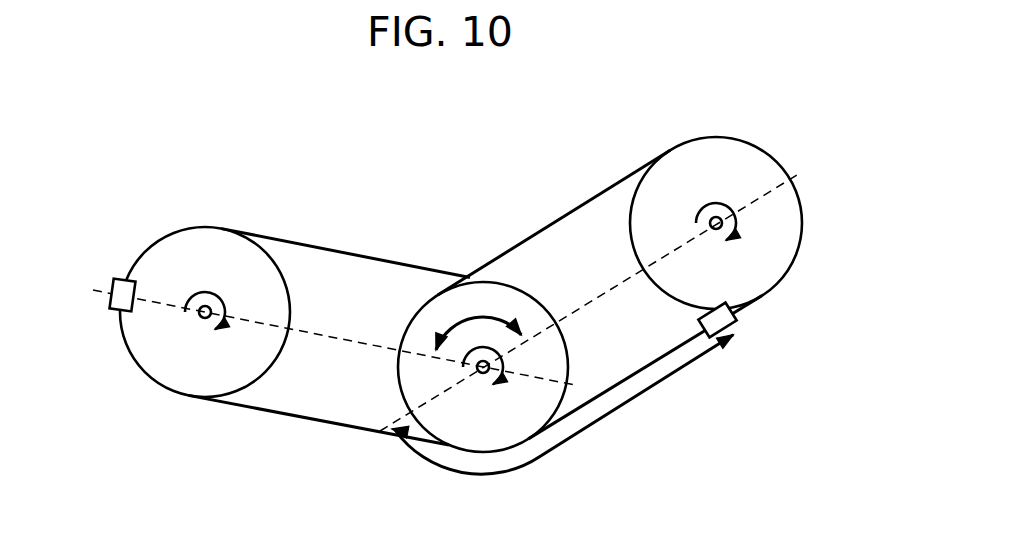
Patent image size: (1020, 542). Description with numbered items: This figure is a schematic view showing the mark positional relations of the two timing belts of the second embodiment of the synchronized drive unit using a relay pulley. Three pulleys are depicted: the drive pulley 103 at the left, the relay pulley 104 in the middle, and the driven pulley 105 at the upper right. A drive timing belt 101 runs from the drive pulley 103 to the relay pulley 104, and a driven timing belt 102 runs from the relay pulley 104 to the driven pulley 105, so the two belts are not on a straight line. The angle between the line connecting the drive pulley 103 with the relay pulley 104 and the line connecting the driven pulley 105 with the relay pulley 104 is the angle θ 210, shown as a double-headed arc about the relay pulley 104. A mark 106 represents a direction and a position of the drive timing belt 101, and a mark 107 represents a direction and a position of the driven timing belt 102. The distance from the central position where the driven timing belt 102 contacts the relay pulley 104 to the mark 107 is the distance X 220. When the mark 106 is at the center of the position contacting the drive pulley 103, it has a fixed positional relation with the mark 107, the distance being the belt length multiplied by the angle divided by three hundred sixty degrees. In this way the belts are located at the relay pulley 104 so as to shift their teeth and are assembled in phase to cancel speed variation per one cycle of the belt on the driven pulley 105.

The drive timing belt 101 is at (308, 422).
The driven timing belt 102 is at (650, 357).
The drive pulley 103 is at (283, 290).
The relay pulley 104 is at (528, 300).
The driven pulley 105 is at (717, 139).
The mark 106 is at (117, 281).
The mark 107 is at (733, 326).
The angle θ 210 is at (452, 322).
The distance X 220 is at (603, 421).